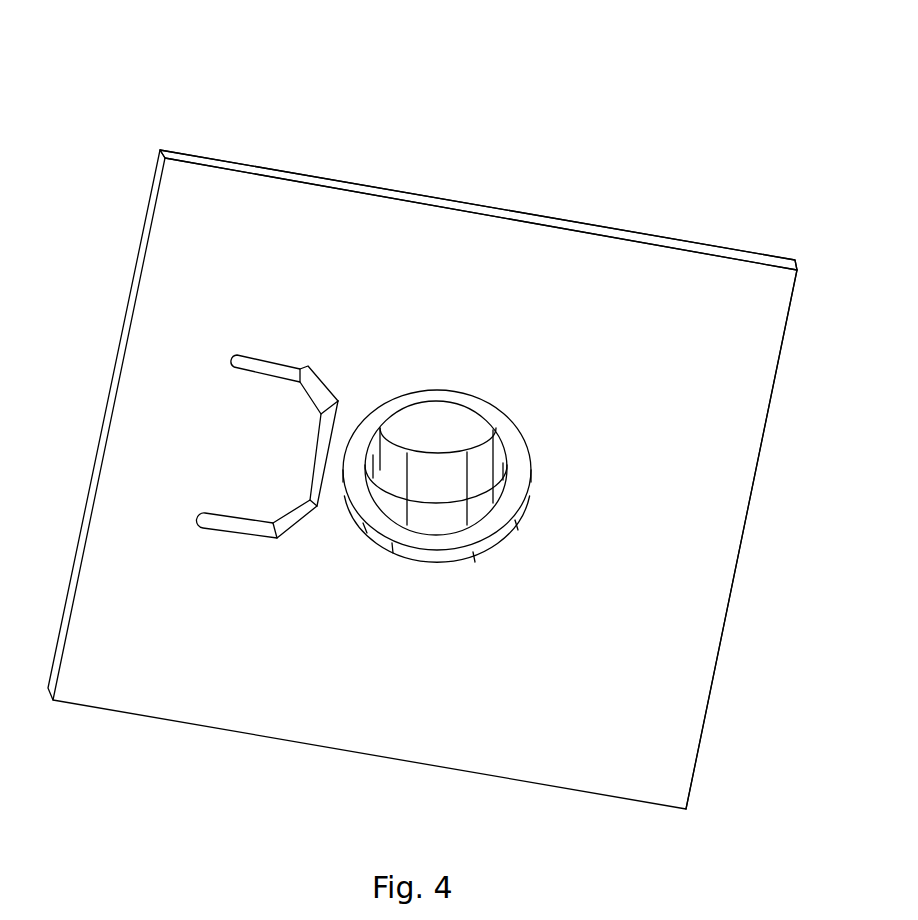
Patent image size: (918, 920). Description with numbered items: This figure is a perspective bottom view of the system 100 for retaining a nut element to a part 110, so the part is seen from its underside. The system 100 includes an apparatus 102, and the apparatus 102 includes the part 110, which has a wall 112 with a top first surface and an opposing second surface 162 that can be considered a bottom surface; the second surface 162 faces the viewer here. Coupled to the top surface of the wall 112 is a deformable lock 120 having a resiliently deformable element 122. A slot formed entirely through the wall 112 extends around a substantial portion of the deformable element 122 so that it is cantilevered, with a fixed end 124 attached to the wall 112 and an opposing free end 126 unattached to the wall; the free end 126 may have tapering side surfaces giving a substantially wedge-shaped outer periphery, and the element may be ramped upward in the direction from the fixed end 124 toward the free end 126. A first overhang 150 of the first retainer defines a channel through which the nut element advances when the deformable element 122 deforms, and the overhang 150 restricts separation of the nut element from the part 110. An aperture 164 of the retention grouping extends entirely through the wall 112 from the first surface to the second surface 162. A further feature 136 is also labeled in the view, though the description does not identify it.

The system 100 is at (601, 65).
The apparatus 102 is at (566, 152).
The part 110 is at (233, 152).
The wall 112 is at (678, 237).
The deformable lock 120 is at (229, 458).
The deformable element 122 is at (283, 417).
The fixed end 124 is at (230, 382).
The free end 126 is at (331, 393).
The bore 136 is at (437, 468).
The first overhang 150 is at (313, 505).
The second surface 162 is at (720, 503).
The aperture 164 is at (446, 564).